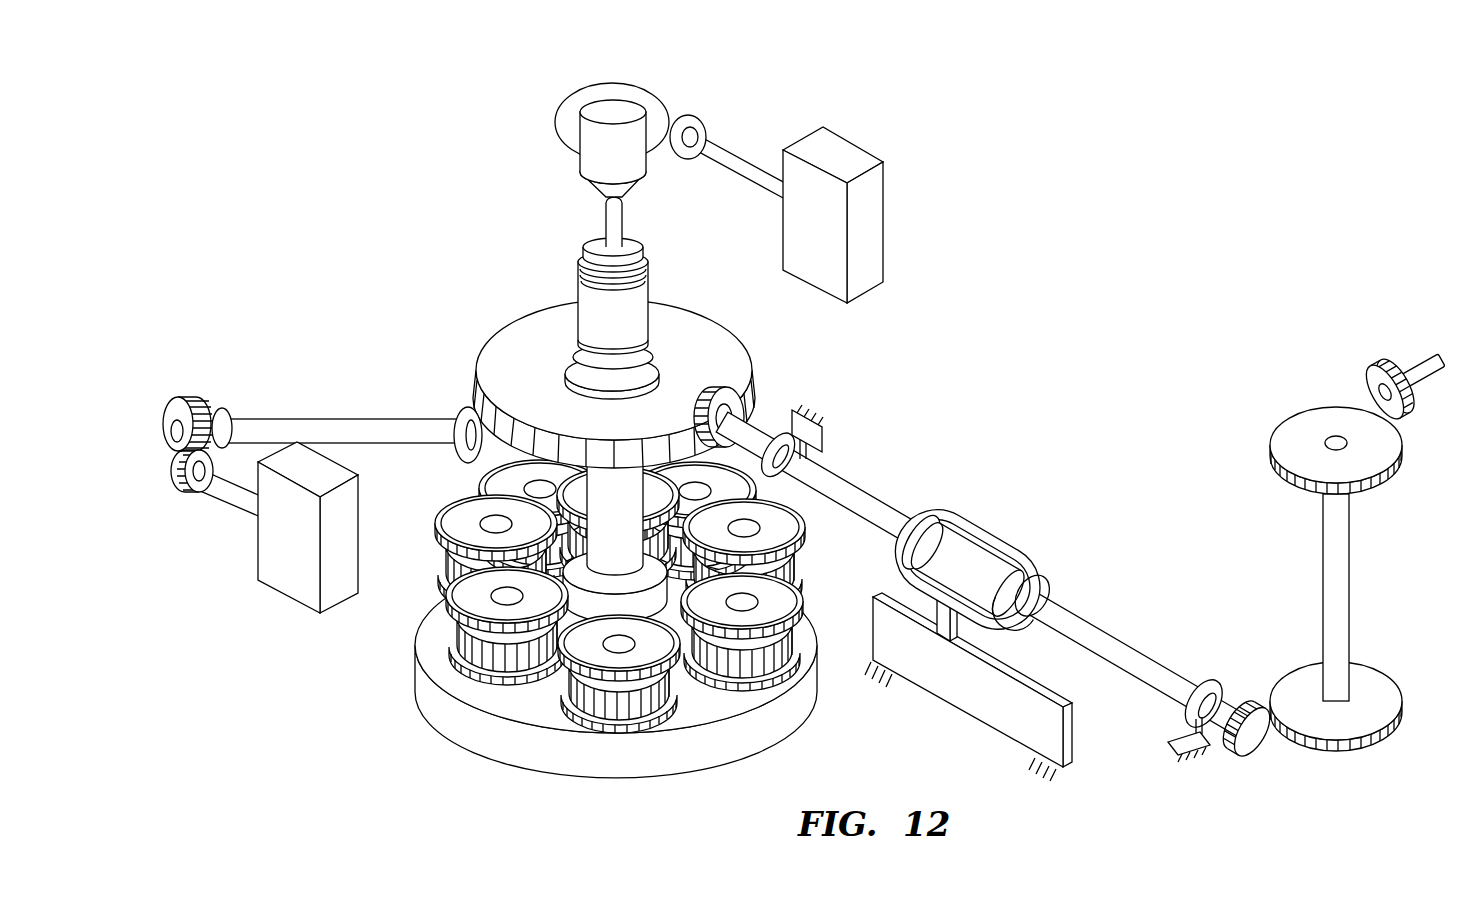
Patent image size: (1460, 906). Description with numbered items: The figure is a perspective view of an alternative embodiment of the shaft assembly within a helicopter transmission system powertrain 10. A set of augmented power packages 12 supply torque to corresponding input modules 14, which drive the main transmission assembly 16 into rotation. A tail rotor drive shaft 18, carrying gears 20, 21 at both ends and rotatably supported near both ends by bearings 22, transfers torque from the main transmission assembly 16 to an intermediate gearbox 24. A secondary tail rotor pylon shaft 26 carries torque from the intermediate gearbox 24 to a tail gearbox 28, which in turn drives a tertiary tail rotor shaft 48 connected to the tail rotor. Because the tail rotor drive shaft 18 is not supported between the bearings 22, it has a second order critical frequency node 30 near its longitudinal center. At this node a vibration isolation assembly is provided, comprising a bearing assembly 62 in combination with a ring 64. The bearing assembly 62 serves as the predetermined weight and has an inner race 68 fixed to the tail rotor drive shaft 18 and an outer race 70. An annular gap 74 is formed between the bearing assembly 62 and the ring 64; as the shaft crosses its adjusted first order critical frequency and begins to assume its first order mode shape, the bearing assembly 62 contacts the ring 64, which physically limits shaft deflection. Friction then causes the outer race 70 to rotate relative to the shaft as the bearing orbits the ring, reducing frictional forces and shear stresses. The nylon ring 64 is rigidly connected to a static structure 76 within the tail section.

The helicopter transmission system powertrain 10 is at (379, 192).
The augmented power packages 12 is at (838, 152).
The input modules 14 is at (581, 63).
The main transmission assembly 16 is at (457, 310).
The tail rotor drive shaft 18 is at (838, 477).
The gear 20 is at (757, 381).
The gear 21 is at (1236, 757).
The bearings 22 is at (786, 484).
The intermediate gearbox 24 is at (1311, 790).
The secondary tail rotor pylon shaft 26 is at (1350, 598).
The tail gearbox 28 is at (1306, 376).
The second order critical frequency node 30 is at (970, 626).
The tertiary tail rotor shaft 48 is at (1421, 359).
The bearing assembly 62 is at (962, 548).
The ring 64 is at (985, 535).
The inner race 68 is at (1022, 628).
The outer race 70 is at (1043, 585).
The annular gap 74 is at (952, 625).
The static structure 76 is at (1050, 740).